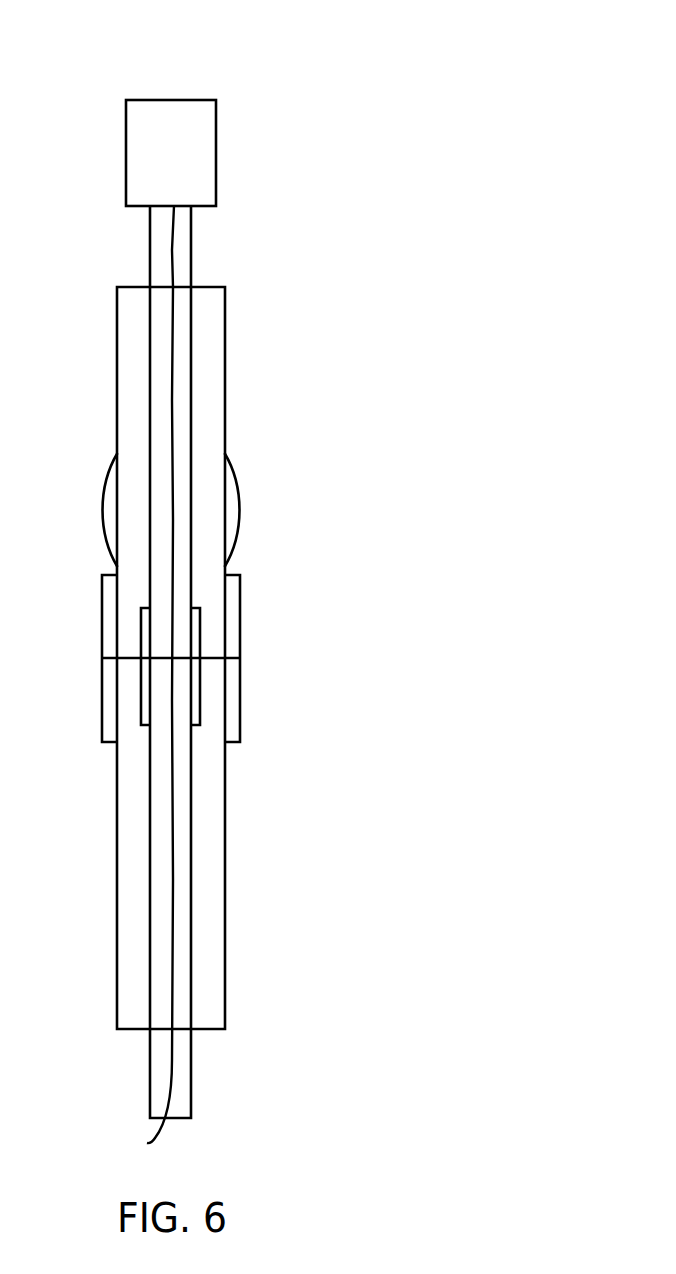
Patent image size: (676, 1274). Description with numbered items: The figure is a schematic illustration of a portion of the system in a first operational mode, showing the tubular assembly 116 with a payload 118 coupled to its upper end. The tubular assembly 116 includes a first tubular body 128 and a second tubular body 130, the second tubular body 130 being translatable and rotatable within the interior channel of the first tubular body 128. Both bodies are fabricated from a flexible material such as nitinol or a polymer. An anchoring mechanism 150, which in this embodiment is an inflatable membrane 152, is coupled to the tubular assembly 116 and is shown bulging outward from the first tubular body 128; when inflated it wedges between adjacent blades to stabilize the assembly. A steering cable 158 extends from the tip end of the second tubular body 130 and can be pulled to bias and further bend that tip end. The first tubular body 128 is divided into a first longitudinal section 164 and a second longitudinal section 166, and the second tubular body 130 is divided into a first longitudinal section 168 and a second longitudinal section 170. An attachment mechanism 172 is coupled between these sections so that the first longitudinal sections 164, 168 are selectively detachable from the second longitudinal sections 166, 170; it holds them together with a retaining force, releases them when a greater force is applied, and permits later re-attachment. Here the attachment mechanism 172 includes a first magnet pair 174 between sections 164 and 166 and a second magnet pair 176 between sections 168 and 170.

The tubular assembly 116 is at (258, 64).
The payload 118 is at (216, 148).
The first tubular body 128 is at (231, 818).
The second tubular body 130 is at (211, 864).
The anchoring mechanism 150 is at (252, 505).
The inflatable membrane 152 is at (240, 530).
The steering cable 158 is at (163, 1135).
The first longitudinal section 164 is at (117, 840).
The second longitudinal section 166 is at (117, 370).
The first longitudinal section 168 is at (150, 1078).
The second longitudinal section 170 is at (150, 244).
The attachment mechanism 172 is at (272, 648).
The first magnet pair 174 is at (240, 690).
The second magnet pair 176 is at (202, 718).